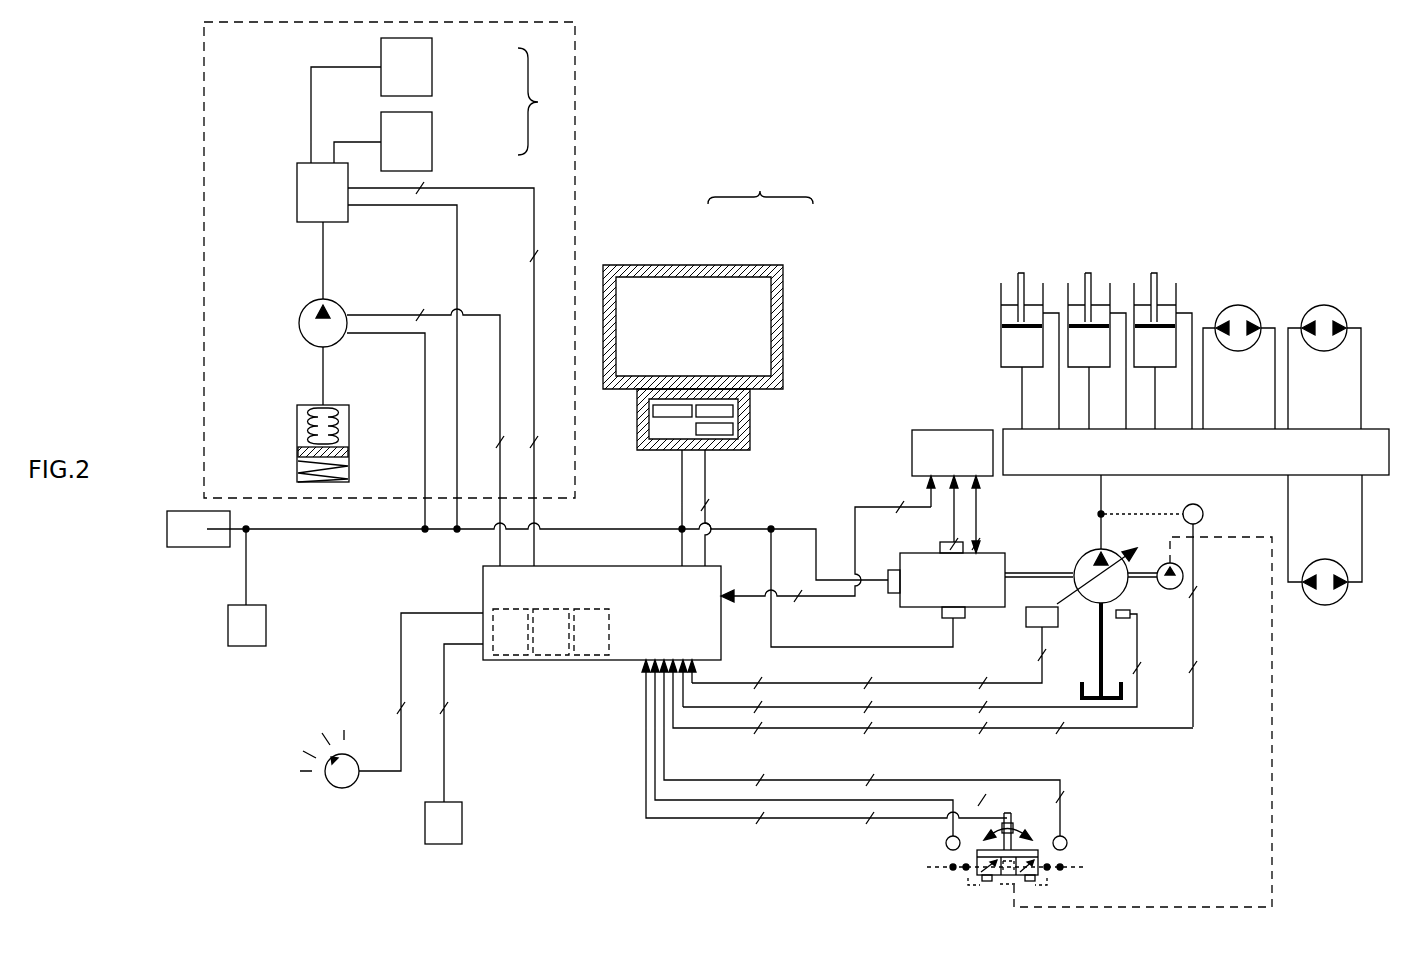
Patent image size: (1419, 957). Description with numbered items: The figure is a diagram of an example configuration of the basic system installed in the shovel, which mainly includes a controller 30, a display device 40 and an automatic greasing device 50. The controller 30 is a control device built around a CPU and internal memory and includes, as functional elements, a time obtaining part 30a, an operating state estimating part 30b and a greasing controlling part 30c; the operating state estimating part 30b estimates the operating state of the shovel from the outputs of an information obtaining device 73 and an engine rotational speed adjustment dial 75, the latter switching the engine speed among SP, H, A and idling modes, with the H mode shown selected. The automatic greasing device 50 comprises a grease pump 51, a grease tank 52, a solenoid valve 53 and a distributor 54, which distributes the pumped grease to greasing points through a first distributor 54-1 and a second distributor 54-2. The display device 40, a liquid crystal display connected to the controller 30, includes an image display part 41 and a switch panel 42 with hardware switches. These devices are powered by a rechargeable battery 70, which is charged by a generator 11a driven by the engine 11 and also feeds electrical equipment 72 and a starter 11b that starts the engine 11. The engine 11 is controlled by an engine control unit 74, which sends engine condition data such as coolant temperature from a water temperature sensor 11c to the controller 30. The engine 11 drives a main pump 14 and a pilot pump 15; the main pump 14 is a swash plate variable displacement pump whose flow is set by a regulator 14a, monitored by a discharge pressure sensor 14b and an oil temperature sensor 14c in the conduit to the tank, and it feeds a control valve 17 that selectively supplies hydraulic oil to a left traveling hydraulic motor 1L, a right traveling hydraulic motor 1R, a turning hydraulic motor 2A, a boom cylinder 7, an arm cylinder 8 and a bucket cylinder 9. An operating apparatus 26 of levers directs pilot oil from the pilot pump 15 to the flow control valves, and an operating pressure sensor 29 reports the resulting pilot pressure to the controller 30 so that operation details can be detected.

The left traveling hydraulic motor 1L is at (1238, 305).
The right traveling hydraulic motor 1R is at (1324, 305).
The turning hydraulic motor 2A is at (1325, 559).
The boom cylinder 7 is at (1021, 273).
The arm cylinder 8 is at (1088, 273).
The bucket cylinder 9 is at (1154, 273).
The engine 11 is at (985, 553).
The generator 11a is at (968, 620).
The starter 11b is at (888, 593).
The water temperature sensor 11c is at (940, 546).
The main pump 14 is at (1082, 558).
The regulator 14a is at (1050, 628).
The discharge pressure sensor 14b is at (1205, 506).
The oil temperature sensor 14c is at (1130, 614).
The pilot pump 15 is at (1162, 564).
The control valve 17 is at (1375, 428).
The operating apparatus 26 is at (1013, 828).
The operating pressure sensor 29 is at (946, 843).
The controller 30 is at (483, 590).
The time obtaining part 30a is at (505, 660).
The operating state estimating part 30b is at (550, 660).
The greasing controlling part 30c is at (595, 660).
The display device 40 is at (760, 181).
The image display part 41 is at (714, 308).
The switch panel 42 is at (752, 402).
The automatic greasing device 50 is at (578, 57).
The grease pump 51 is at (299, 322).
The grease tank 52 is at (297, 450).
The solenoid valve 53 is at (297, 190).
The distributor 54 is at (543, 101).
The first distributor 54-1 is at (432, 67).
The second distributor 54-2 is at (432, 142).
The rechargeable battery 70 is at (247, 646).
The electrical equipment 72 is at (197, 548).
The information obtaining device 73 is at (445, 846).
The engine control unit (ECU) 74 is at (955, 429).
The engine rotational speed adjustment dial 75 is at (342, 788).